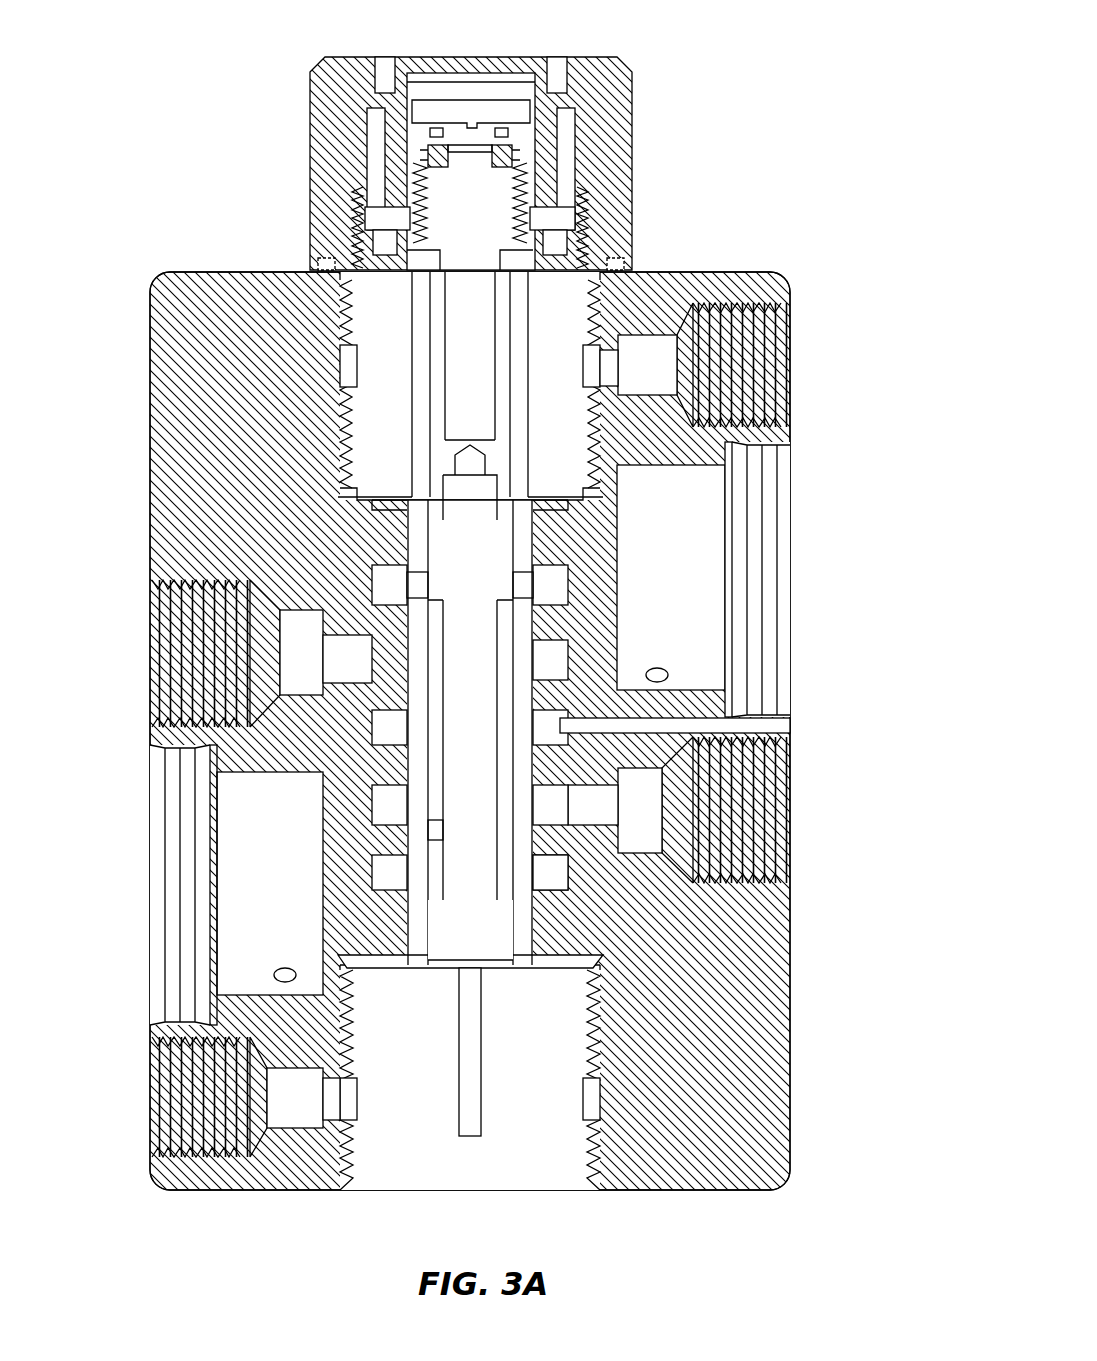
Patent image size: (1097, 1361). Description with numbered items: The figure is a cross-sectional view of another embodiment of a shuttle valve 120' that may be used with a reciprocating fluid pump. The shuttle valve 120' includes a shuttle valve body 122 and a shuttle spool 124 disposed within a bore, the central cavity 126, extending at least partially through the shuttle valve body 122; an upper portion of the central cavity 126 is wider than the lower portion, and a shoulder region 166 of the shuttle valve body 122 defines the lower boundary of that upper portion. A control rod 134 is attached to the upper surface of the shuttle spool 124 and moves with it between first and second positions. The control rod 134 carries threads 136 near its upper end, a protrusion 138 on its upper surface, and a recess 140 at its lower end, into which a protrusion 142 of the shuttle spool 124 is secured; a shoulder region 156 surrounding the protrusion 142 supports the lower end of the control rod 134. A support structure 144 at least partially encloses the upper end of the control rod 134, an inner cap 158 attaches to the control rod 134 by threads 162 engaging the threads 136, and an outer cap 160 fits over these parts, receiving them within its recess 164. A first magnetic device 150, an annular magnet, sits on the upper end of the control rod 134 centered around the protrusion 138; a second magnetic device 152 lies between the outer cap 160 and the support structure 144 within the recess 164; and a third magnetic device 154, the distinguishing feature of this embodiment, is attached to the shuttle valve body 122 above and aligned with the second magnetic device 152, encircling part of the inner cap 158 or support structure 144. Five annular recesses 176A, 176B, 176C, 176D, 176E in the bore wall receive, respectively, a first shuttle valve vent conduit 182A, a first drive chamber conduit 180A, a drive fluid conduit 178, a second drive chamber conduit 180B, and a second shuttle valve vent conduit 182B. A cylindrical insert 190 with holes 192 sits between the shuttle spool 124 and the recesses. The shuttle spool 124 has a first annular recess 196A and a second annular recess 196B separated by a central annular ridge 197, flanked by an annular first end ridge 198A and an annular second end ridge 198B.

The shuttle valve 120' is at (556, 606).
The shuttle valve body 122 is at (185, 338).
The shuttle spool 124 is at (443, 557).
The central cavity 126 is at (622, 380).
The control rod 134 is at (482, 340).
The threads 136 is at (362, 215).
The protrusion 138 is at (418, 170).
The recess 140 is at (512, 405).
The protrusion 142 is at (463, 487).
The support structure 144 is at (543, 214).
The first magnetic device 150 is at (520, 150).
The second magnetic device 152 is at (365, 200).
The third magnetic device 154 is at (395, 118).
The shoulder region 156 is at (520, 475).
The inner cap 158 is at (517, 133).
The outer cap 160 is at (612, 73).
The threads 162 is at (580, 240).
The recess 164 is at (488, 108).
The shoulder region 166 is at (470, 462).
The first recess 176A is at (385, 584).
The second recess 176B is at (560, 660).
The third recess 176C is at (387, 805).
The fourth recess 176D is at (435, 833).
The fifth recess 176E is at (557, 877).
The drive fluid conduit 178 is at (575, 725).
The first drive chamber conduit 180A is at (295, 657).
The second drive chamber conduit 180B is at (650, 815).
The first shuttle valve vent conduit 182A is at (695, 570).
The second shuttle valve vent conduit 182B is at (250, 905).
The cylindrical insert 190 is at (418, 535).
The holes 192 is at (552, 652).
The first annular recess 196A is at (385, 735).
The second annular recess 196B is at (380, 872).
The central annular ridge 197 is at (527, 735).
The annular first end ridge 198A is at (490, 550).
The annular second end ridge 198B is at (483, 920).